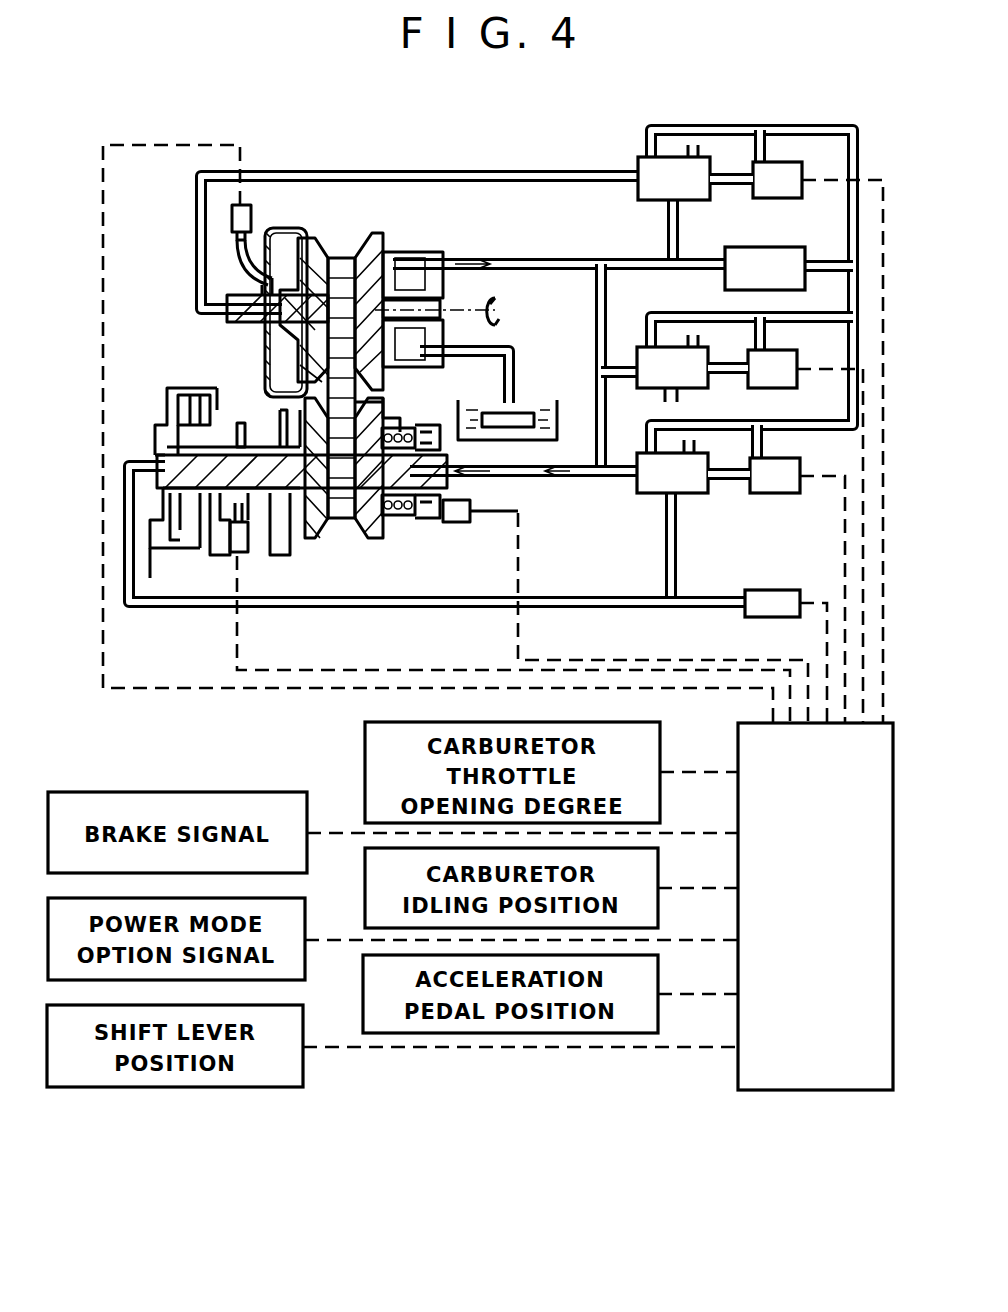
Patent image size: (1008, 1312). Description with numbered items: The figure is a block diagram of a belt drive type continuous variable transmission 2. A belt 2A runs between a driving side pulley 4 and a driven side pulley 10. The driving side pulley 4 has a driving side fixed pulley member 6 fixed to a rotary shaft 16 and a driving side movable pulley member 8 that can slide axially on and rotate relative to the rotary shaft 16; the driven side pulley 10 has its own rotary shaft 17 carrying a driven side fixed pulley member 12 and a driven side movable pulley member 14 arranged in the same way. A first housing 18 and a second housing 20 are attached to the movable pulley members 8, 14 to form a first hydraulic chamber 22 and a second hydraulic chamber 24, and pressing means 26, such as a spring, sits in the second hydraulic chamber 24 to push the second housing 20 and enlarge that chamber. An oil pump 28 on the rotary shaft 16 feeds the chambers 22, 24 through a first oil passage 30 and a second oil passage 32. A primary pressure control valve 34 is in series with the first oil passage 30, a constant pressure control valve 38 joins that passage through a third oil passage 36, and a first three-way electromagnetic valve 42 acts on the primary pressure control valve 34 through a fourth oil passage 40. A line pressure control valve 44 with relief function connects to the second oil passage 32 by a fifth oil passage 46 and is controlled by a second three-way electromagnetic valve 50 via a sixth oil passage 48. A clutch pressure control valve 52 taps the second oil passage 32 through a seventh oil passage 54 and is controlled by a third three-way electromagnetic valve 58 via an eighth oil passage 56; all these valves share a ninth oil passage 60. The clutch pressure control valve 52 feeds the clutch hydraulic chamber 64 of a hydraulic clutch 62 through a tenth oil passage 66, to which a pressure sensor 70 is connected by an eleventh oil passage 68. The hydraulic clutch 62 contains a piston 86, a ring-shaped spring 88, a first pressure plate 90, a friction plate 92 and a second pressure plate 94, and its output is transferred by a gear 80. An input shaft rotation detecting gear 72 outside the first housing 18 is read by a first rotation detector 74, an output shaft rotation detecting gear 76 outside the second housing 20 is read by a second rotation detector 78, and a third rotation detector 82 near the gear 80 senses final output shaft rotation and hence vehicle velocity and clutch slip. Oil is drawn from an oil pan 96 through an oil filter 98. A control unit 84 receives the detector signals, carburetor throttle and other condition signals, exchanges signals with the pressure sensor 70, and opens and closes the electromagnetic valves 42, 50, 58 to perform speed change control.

The belt drive type continuous variable transmission 2 is at (815, 100).
The belt 2A is at (343, 255).
The driving side pulley 4 is at (205, 318).
The driving side fixed pulley member 6 is at (392, 250).
The driving side movable pulley member 8 is at (322, 268).
The driven side pulley 10 is at (443, 524).
The driven side fixed pulley member 12 is at (328, 522).
The driven side movable pulley member 14 is at (352, 538).
The rotary shaft 16 is at (448, 322).
The rotary shaft 17 is at (300, 505).
The first housing 18 is at (272, 245).
The second housing 20 is at (400, 440).
The first hydraulic chamber 22 is at (272, 352).
The second hydraulic chamber 24 is at (395, 512).
The pressing means 26 is at (430, 528).
The oil pump 28 is at (418, 258).
The first oil passage 30 is at (545, 170).
The second oil passage 32 is at (596, 392).
The primary pressure control valve 34 is at (674, 172).
The third oil passage 36 is at (690, 262).
The constant pressure control valve 38 is at (765, 268).
The fourth oil passage 40 is at (735, 185).
The first three-way electromagnetic valve 42 is at (777, 180).
The line pressure control valve 44 is at (672, 368).
The fifth oil passage 46 is at (633, 362).
The sixth oil passage 48 is at (730, 372).
The second three-way electromagnetic valve 50 is at (772, 369).
The clutch pressure control valve 52 is at (672, 466).
The seventh oil passage 54 is at (617, 480).
The eighth oil passage 56 is at (730, 480).
The third three-way electromagnetic valve 58 is at (775, 475).
The ninth oil passage 60 is at (858, 140).
The hydraulic clutch 62 is at (148, 424).
The clutch hydraulic chamber 64 is at (165, 447).
The tenth oil passage 66 is at (450, 602).
The eleventh oil passage 68 is at (708, 598).
The pressure sensor 70 is at (777, 590).
The input shaft rotation detecting gear 72 is at (237, 262).
The first rotation detector 74 is at (240, 205).
The output shaft rotation detecting gear 76 is at (440, 437).
The second rotation detector 78 is at (470, 511).
The gear 80 is at (240, 418).
The third rotation detector 82 is at (237, 556).
The control unit 84 is at (828, 1090).
The piston 86 is at (170, 497).
The ring-shaped spring 88 is at (178, 518).
The first pressure plate 90 is at (183, 545).
The friction plate 92 is at (195, 550).
The second pressure plate 94 is at (210, 548).
The oil pan 96 is at (527, 440).
The oil filter 98 is at (520, 412).